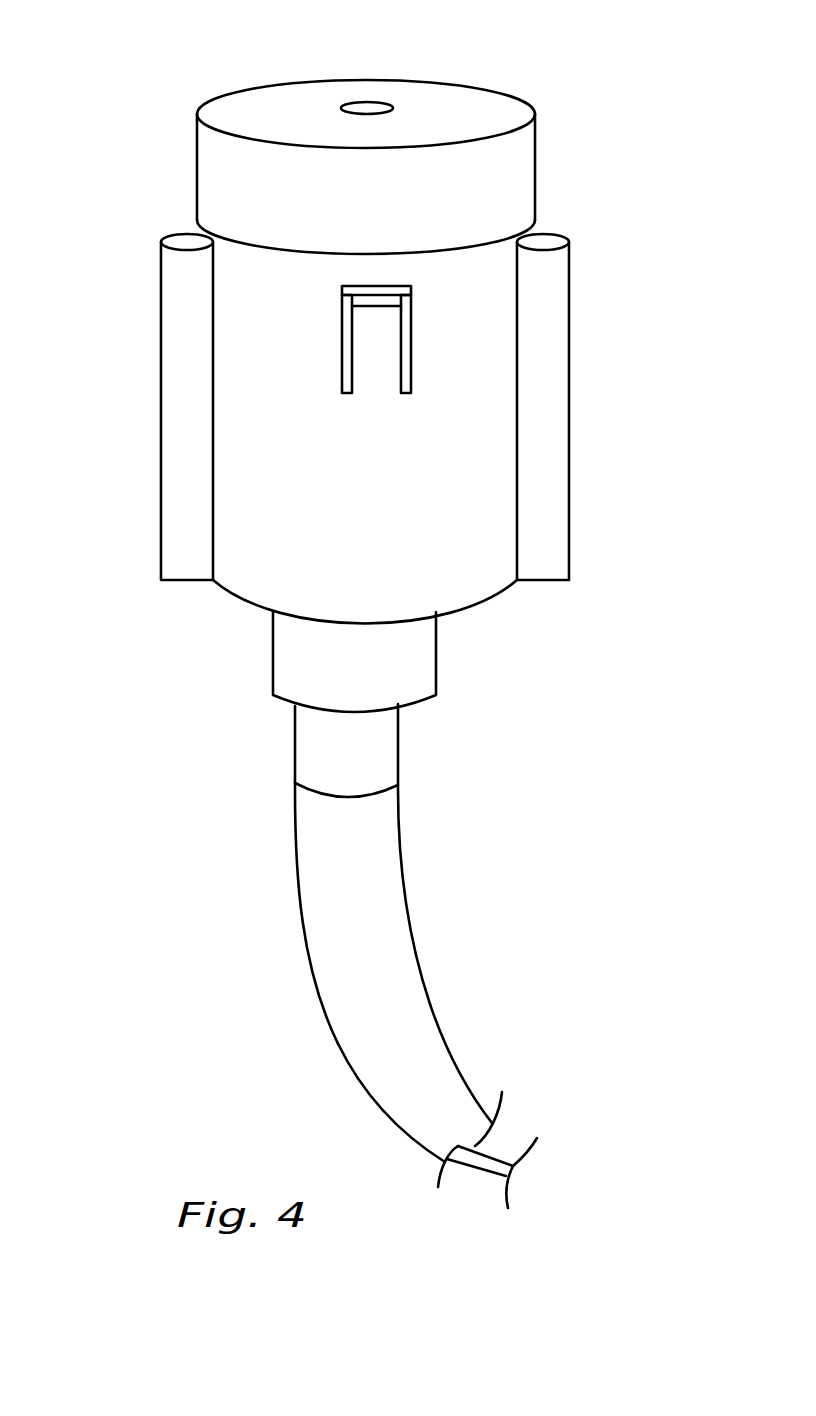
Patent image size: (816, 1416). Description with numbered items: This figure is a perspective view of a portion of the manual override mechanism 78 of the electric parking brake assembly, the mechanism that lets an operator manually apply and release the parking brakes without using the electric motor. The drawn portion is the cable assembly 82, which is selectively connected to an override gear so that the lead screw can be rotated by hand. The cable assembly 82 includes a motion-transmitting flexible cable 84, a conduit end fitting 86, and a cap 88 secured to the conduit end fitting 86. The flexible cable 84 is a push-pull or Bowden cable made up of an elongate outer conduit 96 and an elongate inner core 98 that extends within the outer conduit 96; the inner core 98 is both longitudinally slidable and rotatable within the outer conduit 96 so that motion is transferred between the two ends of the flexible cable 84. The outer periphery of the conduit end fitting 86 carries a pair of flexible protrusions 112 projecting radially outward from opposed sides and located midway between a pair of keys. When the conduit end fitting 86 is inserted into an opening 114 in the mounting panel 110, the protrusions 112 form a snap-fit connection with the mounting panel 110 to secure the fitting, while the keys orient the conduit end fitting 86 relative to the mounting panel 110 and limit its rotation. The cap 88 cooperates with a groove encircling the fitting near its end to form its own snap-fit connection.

The manual override mechanism 78 is at (630, 626).
The cable assembly 82 is at (411, 940).
The flexible cable 84 is at (405, 887).
The conduit end fitting 86 is at (566, 424).
The cap 88 is at (537, 178).
The outer conduit 96 is at (452, 1058).
The inner core 98 is at (478, 1147).
The mounting panel 110 is at (158, 520).
The flexible protrusions 112 is at (362, 346).
The opening 114 is at (383, 103).